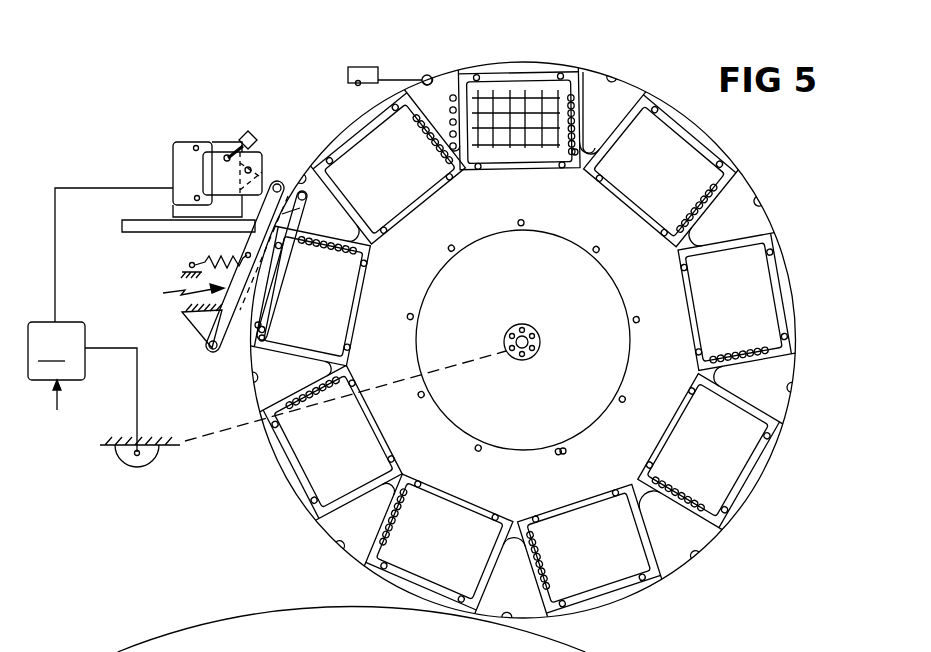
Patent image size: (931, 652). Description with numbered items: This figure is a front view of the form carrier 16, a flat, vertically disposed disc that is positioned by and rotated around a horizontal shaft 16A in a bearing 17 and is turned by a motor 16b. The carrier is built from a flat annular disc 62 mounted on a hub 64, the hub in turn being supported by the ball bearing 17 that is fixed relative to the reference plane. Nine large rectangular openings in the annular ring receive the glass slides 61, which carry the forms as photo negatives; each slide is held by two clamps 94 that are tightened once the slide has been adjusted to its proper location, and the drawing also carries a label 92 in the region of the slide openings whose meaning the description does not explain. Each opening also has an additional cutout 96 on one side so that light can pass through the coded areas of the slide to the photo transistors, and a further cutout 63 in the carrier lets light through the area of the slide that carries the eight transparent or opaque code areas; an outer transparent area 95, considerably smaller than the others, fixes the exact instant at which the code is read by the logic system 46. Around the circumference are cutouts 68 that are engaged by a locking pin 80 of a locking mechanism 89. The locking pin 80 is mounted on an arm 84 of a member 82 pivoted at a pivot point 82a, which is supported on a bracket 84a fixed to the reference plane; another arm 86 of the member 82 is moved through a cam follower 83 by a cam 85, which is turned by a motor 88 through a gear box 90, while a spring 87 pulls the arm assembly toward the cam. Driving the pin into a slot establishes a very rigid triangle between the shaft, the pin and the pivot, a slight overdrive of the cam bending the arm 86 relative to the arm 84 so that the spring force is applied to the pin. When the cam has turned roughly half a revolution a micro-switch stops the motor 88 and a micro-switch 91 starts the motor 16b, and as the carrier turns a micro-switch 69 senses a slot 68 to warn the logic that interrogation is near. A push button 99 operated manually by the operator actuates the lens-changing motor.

The form carrier 16 is at (763, 214).
The horizontal shaft 16A is at (529, 337).
The motor 16b is at (144, 464).
The bearing 17 is at (535, 350).
The logic system 46 is at (103, 429).
The glass slide 61 is at (672, 174).
The annular disc 62 is at (647, 432).
The cutout 63 is at (566, 452).
The hub 64 is at (553, 400).
The cutouts 68 is at (338, 550).
The micro-switch 69 is at (362, 67).
The locking pin 80 is at (301, 190).
The member 82 is at (182, 290).
The pivot point 82a is at (226, 350).
The cam follower 83 is at (272, 185).
The arm 84 is at (288, 222).
The bracket 84a is at (202, 327).
The cam 85 is at (260, 160).
The arm 86 is at (254, 241).
The spring 87 is at (263, 273).
The motor 88 is at (176, 166).
The locking mechanism 89 is at (174, 117).
The gear box 90 is at (205, 151).
The micro-switch 91 is at (242, 136).
The film holder 92 is at (515, 170).
The clamps 94 is at (445, 150).
The outer transparent area 95 is at (578, 108).
The cutout 96 is at (584, 130).
The push button 99 is at (100, 322).